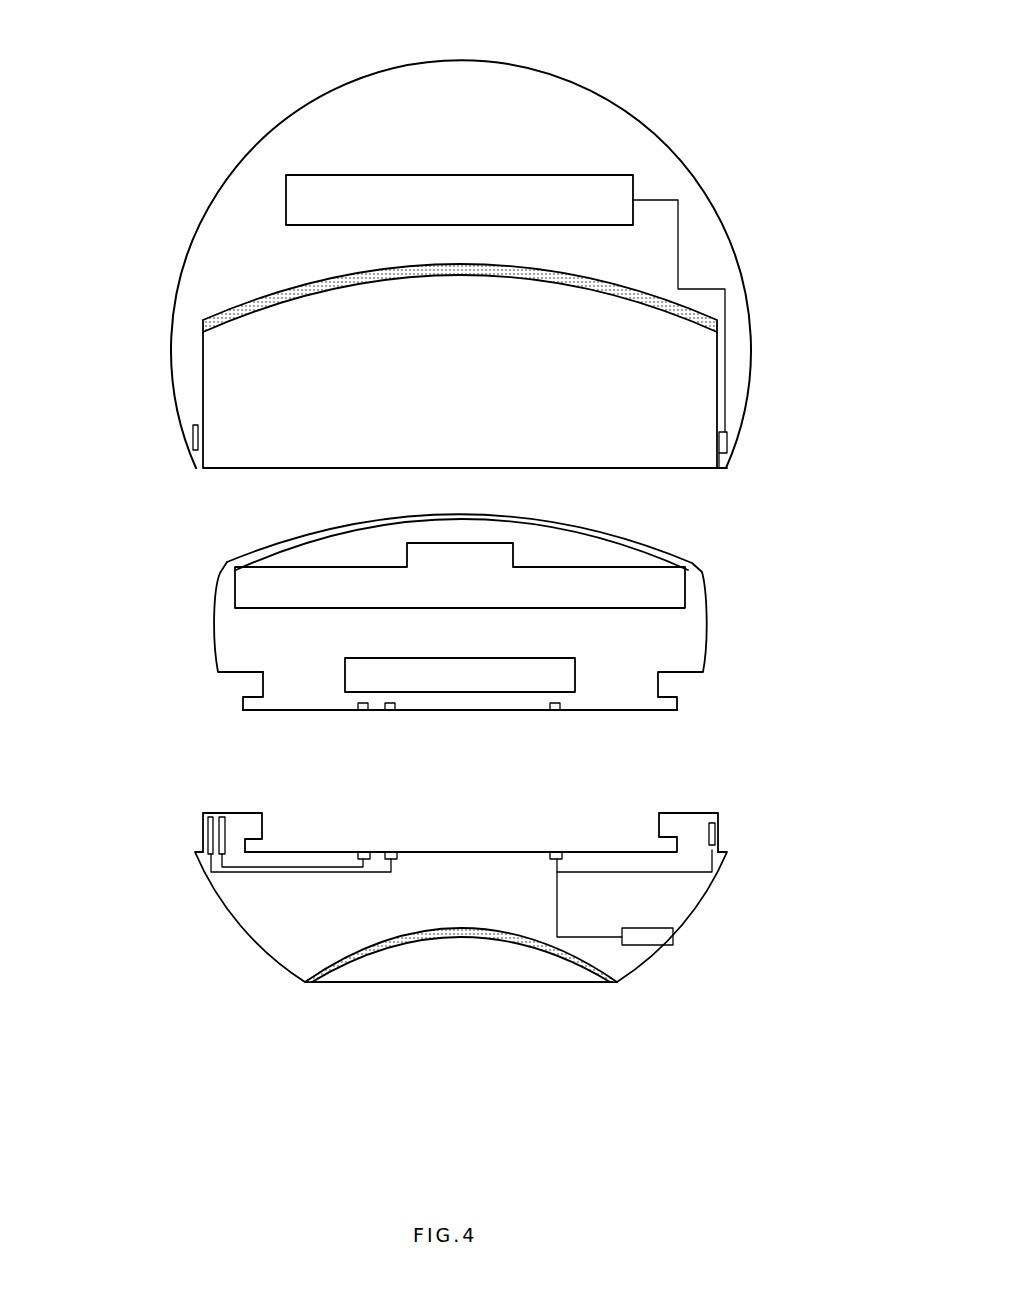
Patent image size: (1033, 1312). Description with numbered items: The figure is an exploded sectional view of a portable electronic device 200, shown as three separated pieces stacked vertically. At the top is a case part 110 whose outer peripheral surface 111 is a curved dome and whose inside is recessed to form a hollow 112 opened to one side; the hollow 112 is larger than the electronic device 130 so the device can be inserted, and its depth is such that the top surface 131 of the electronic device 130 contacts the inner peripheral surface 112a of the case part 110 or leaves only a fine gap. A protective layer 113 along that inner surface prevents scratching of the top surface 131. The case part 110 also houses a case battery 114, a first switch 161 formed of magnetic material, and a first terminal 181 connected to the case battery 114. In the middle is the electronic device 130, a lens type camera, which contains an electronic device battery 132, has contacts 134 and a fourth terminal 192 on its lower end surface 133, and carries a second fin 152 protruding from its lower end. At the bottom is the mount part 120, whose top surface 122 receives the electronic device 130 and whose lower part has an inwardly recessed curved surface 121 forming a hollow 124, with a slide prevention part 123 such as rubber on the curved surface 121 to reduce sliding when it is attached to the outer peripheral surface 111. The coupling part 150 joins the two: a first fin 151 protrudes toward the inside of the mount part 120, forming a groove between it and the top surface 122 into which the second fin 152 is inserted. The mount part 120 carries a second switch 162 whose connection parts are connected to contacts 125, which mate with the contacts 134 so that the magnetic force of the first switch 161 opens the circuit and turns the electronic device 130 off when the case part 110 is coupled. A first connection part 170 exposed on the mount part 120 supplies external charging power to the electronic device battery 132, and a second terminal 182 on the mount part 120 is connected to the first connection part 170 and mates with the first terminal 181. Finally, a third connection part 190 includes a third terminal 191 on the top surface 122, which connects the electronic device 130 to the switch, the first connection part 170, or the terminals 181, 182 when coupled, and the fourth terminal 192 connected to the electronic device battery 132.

The portable electronic device 200 is at (208, 44).
The case part 110 is at (650, 113).
The outer peripheral surface 111 is at (556, 73).
The hollow 112 is at (232, 378).
The inner peripheral surface 112a is at (258, 299).
The protective layer 113 is at (210, 320).
The case battery 114 is at (640, 175).
The mount part 120 is at (213, 910).
The recessed curved surface 121 is at (458, 938).
The top surface 122 is at (622, 852).
The slide prevention part 123 is at (545, 950).
The hollow 124 is at (430, 968).
The contacts 125 is at (390, 852).
The electronic device 130 is at (732, 602).
The top surface 131 is at (655, 545).
The electronic device battery 132 is at (567, 672).
The lower end surface 133 is at (293, 714).
The contacts 134 is at (390, 712).
The coupling part 150 is at (120, 713).
The first fin 151 is at (258, 820).
The second fin 152 is at (243, 706).
The first switch 161 is at (193, 437).
The second switch 162 is at (208, 832).
The first connection part 170 is at (668, 940).
The first terminal 181 is at (727, 440).
The second terminal 182 is at (715, 835).
The third connection part 190 is at (512, 757).
The third terminal 191 is at (556, 852).
The fourth terminal 192 is at (553, 712).